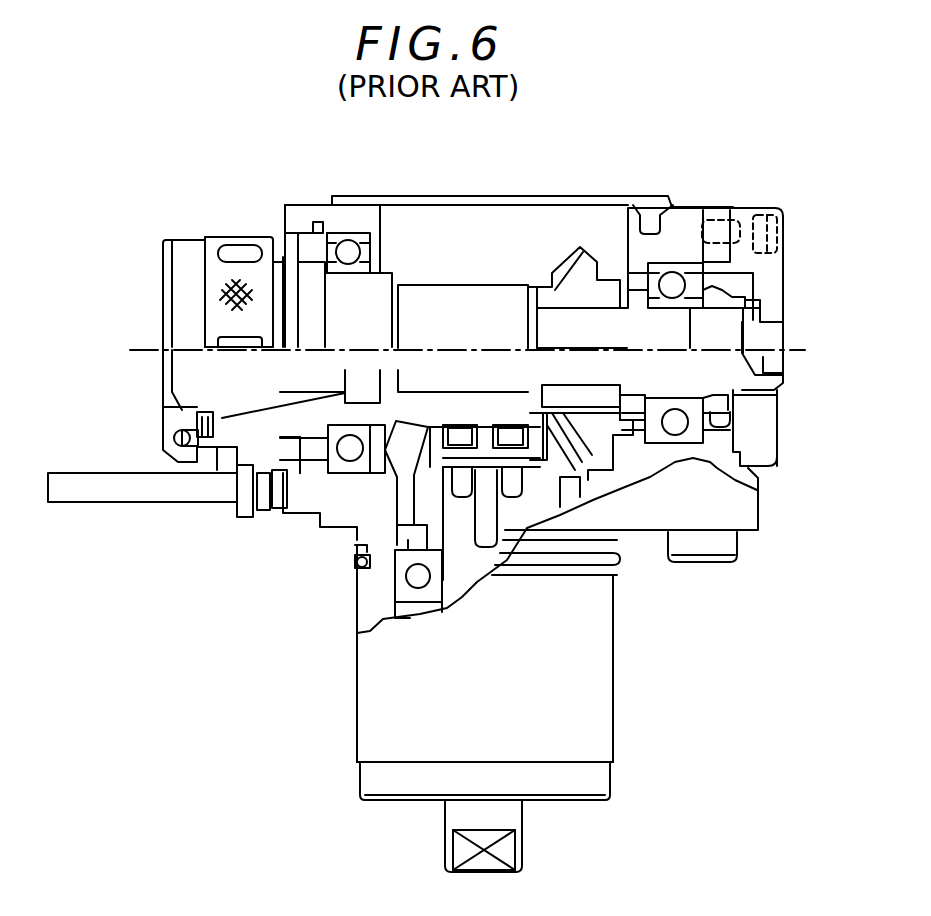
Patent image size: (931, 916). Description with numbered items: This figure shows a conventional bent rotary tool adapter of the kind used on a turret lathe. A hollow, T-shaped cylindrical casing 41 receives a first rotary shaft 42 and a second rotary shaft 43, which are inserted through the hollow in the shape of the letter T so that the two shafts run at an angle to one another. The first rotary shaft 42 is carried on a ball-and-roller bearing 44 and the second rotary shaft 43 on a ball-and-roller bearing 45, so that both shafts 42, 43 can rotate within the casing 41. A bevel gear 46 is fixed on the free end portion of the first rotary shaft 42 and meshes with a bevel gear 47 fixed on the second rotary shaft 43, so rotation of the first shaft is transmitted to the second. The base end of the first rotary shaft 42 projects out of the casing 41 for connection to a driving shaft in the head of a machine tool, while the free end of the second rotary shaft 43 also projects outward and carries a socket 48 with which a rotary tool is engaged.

The T-shaped cylindrical casing 41 is at (690, 495).
The first rotary shaft 42 is at (478, 573).
The second rotary shaft 43 is at (599, 333).
The ball-and-roller bearing 44 is at (418, 576).
The ball-and-roller bearing 45 is at (348, 252).
The bevel gear 46 is at (555, 450).
The bevel gear 47 is at (574, 285).
The socket 48 is at (222, 405).